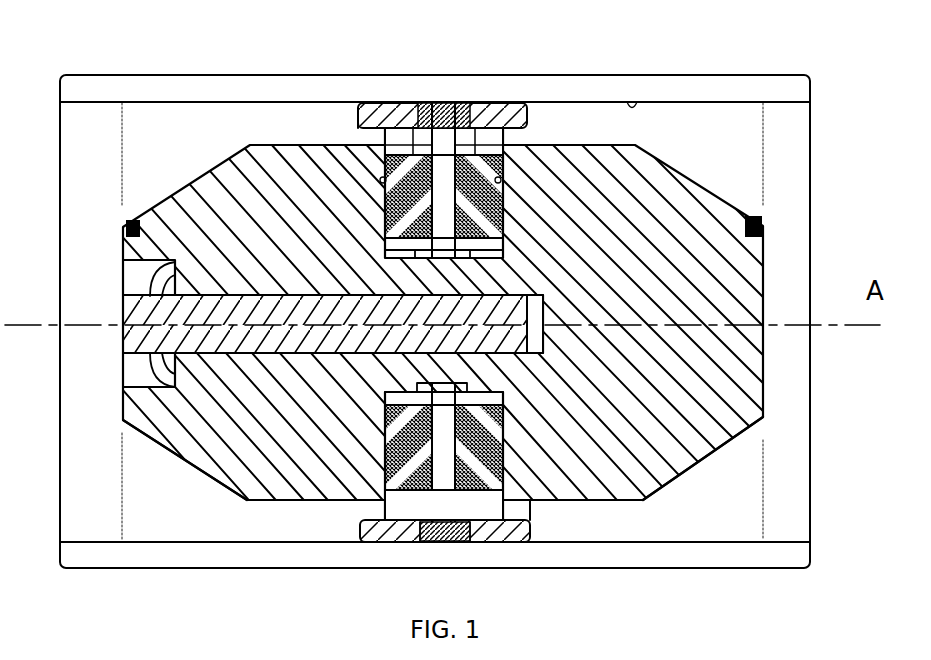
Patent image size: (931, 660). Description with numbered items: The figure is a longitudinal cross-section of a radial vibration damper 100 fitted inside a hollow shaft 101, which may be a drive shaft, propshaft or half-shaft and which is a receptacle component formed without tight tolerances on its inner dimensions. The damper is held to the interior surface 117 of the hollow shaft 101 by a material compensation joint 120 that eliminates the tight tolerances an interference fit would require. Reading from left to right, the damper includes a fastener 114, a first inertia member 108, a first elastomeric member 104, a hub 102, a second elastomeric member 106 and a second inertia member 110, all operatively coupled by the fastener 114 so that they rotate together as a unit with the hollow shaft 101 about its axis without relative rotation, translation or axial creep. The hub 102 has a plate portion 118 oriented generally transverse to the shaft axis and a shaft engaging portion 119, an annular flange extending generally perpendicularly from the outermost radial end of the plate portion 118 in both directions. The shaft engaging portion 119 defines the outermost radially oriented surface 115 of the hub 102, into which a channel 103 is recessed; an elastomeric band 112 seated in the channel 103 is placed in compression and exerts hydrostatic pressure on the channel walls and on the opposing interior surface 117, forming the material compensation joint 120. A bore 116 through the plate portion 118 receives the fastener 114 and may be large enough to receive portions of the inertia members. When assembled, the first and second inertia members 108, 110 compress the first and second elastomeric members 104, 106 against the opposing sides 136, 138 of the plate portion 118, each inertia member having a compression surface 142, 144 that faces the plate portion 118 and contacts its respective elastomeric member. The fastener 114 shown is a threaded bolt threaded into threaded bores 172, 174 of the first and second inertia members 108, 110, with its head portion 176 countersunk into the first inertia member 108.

The radial vibration damper 100 is at (690, 145).
The hollow shaft 101 is at (713, 85).
The hub 102 is at (522, 125).
The channel 103 is at (486, 532).
The first elastomeric member 104 is at (363, 513).
The second elastomeric member 106 is at (527, 513).
The first inertia member 108 is at (213, 178).
The second inertia member 110 is at (706, 457).
The elastomeric band 112 is at (450, 105).
The fastener 114 is at (128, 345).
The outermost radially oriented surface 115 is at (377, 103).
The bore 116 is at (440, 394).
The interior surface 117 is at (633, 108).
The plate portion 118 is at (440, 150).
The shaft engaging portion 119 is at (347, 116).
The material compensation joint 120 is at (466, 92).
The opposing side of the plate portion 136 is at (418, 519).
The opposing side of the plate portion 138 is at (522, 533).
The compression surface 142 is at (380, 183).
The compression surface 144 is at (504, 182).
The threaded bore 172 is at (380, 288).
The threaded bore 174 is at (543, 343).
The head portion 176 is at (150, 292).